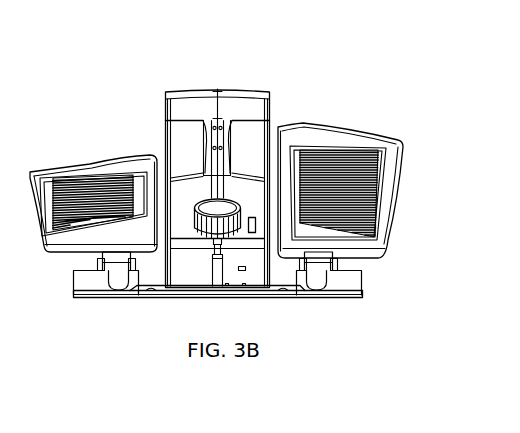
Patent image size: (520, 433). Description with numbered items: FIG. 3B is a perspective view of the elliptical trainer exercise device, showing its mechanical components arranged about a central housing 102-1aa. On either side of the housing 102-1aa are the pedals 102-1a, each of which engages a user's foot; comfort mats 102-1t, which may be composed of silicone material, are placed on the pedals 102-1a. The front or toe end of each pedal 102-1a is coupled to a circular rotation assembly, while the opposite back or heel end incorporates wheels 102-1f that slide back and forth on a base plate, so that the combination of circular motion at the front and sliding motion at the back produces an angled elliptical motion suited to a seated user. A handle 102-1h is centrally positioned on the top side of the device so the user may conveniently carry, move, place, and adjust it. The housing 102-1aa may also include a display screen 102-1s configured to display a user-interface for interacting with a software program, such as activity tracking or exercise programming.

The housing 102-1aa is at (200, 108).
The handle 102-1h is at (221, 140).
The pedals 102-1a is at (93, 165).
The comfort mats 102-1t is at (83, 203).
The display screen 102-1s is at (255, 226).
The wheels 102-1f is at (115, 272).